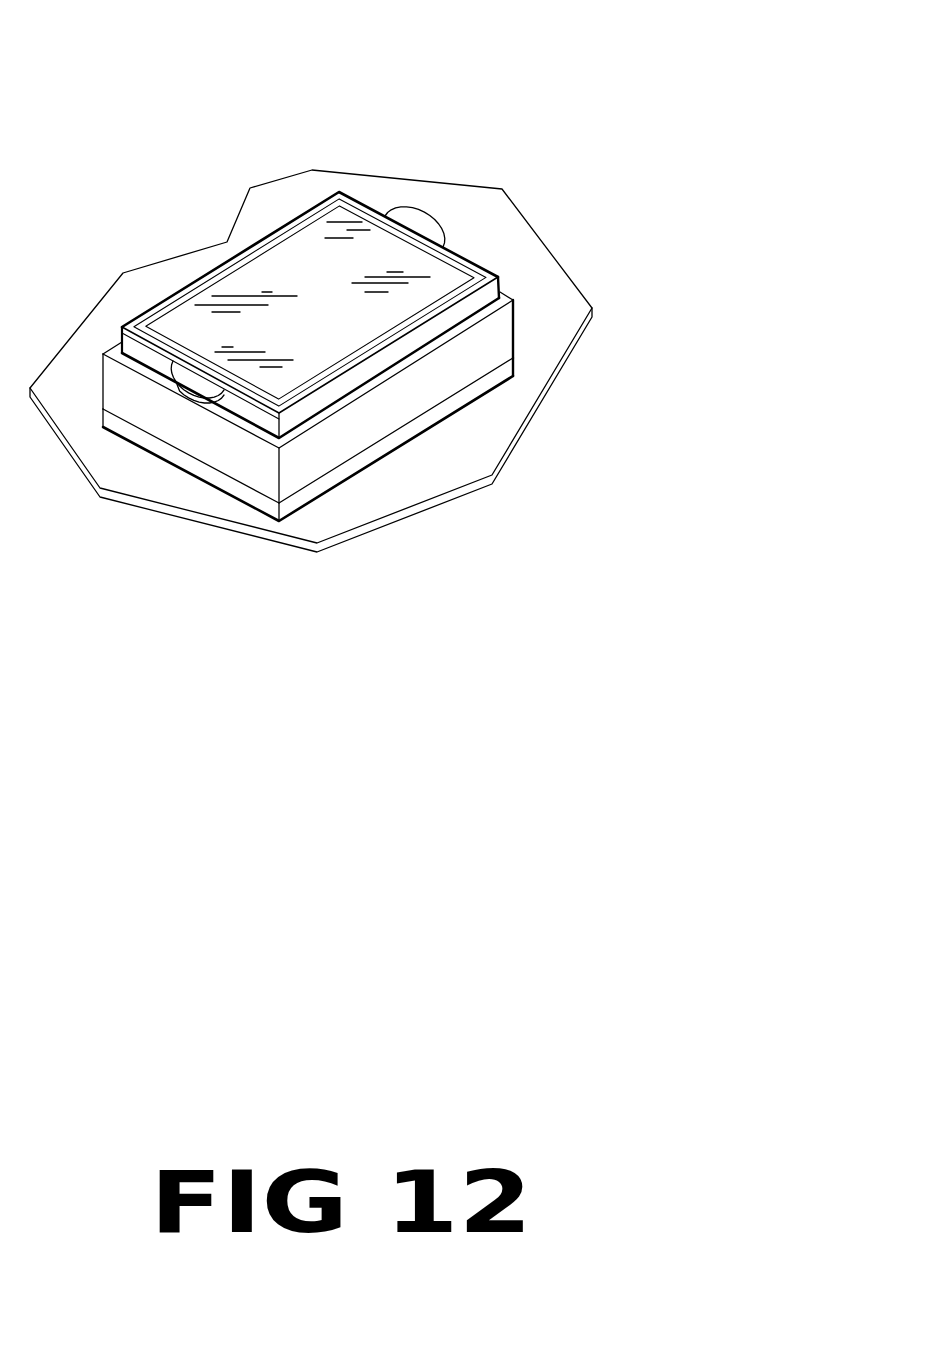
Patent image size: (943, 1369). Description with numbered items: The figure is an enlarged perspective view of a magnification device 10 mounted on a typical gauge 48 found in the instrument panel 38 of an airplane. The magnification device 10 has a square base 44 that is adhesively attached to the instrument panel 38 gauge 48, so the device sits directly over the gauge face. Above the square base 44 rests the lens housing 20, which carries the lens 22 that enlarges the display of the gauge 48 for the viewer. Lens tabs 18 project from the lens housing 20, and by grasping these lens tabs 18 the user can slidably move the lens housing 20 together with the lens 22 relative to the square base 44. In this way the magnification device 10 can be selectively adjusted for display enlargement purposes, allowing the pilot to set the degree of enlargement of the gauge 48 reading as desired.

The magnification device 10 is at (392, 386).
The lens tabs 18 is at (427, 210).
The lens housing 20 is at (497, 280).
The lens 22 is at (315, 302).
The instrument panel 38 is at (372, 528).
The square base 44 is at (222, 455).
The gauge 48 is at (490, 388).